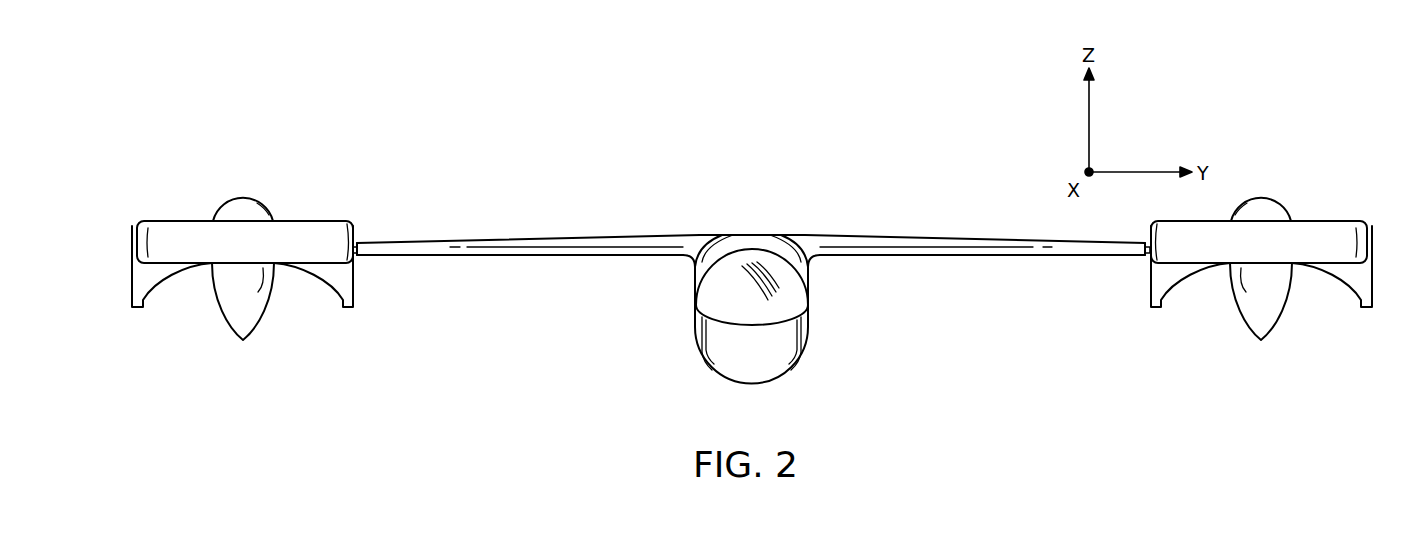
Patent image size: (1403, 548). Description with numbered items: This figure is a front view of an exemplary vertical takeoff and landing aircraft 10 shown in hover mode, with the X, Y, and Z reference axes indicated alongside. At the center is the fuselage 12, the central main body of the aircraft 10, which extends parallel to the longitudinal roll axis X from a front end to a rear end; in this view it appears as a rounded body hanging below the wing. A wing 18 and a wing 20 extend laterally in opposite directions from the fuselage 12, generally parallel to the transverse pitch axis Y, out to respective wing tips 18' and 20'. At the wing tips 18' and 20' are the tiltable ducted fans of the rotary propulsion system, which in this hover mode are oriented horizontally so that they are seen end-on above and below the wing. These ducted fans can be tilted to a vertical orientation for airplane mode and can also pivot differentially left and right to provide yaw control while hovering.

The aircraft 10 is at (582, 117).
The fuselage 12 is at (780, 377).
The wing 18 is at (948, 218).
The wing tip 18' is at (1184, 244).
The wing 20 is at (554, 218).
The wing tip 20' is at (319, 244).